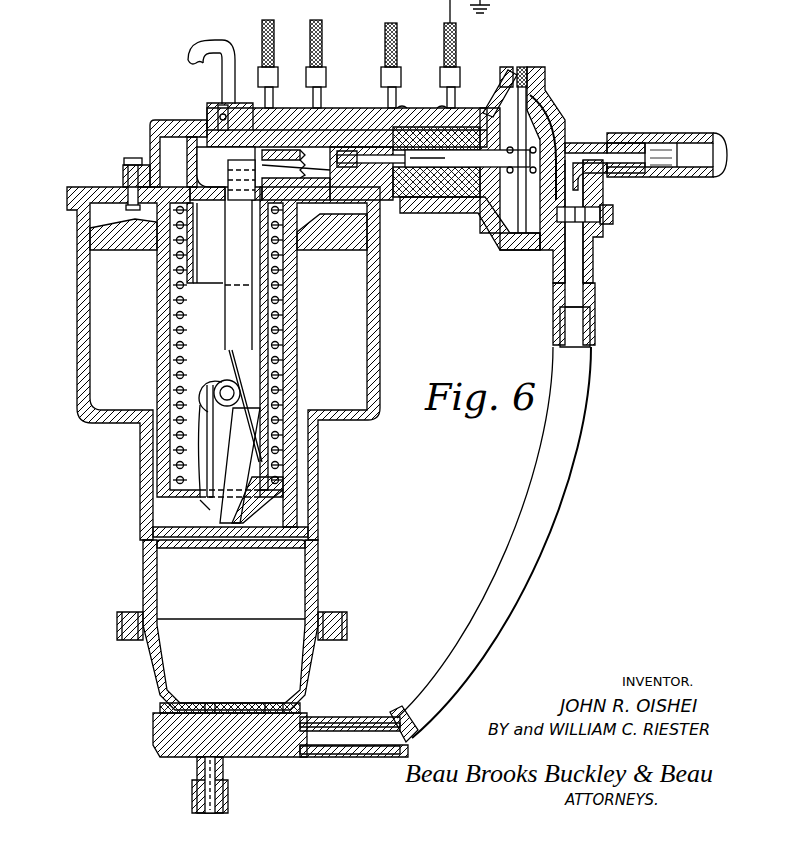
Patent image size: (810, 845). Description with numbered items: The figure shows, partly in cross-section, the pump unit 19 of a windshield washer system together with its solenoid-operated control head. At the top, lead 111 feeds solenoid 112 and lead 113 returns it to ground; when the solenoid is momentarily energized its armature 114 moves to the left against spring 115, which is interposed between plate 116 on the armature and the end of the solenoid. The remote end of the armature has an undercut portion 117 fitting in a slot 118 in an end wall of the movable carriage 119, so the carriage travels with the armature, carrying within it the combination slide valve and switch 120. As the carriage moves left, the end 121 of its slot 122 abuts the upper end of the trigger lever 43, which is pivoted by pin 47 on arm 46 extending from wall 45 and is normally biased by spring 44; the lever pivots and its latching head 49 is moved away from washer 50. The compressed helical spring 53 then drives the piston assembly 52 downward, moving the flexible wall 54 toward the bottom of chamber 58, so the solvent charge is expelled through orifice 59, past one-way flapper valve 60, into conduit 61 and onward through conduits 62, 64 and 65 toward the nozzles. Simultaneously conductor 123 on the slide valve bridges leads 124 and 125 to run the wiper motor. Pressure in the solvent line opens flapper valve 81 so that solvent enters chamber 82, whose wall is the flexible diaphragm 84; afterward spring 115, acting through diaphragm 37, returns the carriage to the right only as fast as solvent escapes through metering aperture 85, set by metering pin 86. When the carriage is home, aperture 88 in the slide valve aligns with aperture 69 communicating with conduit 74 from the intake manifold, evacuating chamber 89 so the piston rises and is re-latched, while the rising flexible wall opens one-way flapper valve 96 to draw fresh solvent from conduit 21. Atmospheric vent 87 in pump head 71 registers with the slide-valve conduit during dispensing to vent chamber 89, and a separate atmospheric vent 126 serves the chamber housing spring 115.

The pump unit 19 is at (78, 396).
The conduit 21 is at (228, 795).
The diaphragm 37 is at (527, 215).
The trigger lever 43 is at (246, 260).
The spring 44 is at (201, 441).
The wall 45 is at (255, 478).
The arm 46 is at (252, 375).
The pin 47 is at (222, 382).
The latching head 49 is at (207, 510).
The washer 50 is at (200, 490).
The piston assembly 52 is at (300, 324).
The helical spring 53 is at (280, 308).
The flexible wall 54 is at (245, 550).
The chamber 58 is at (223, 606).
The orifice 59 is at (270, 705).
The one-way flapper valve 60 is at (283, 705).
The conduit 61 is at (445, 672).
The conduit 62 is at (582, 258).
The conduit 64 is at (595, 143).
The conduit 65 is at (688, 133).
The aperture 69 is at (212, 107).
The pump head 71 is at (150, 142).
The conduit 74 is at (213, 40).
The flapper valve 81 is at (560, 125).
The chamber 82 is at (552, 112).
The flexible diaphragm 84 is at (538, 100).
The metering aperture 85 is at (540, 252).
The metering pin 86 is at (615, 214).
The atmospheric vent 87 is at (200, 112).
The aperture 88 is at (224, 148).
The chamber 89 is at (310, 226).
The one-way flapper valve 96 is at (210, 703).
The lead 111 is at (386, 50).
The solenoid 112 is at (410, 200).
The lead 113 is at (458, 48).
The armature 114 is at (467, 160).
The spring 115 is at (493, 150).
The plate 116 is at (525, 185).
The undercut portion 117 is at (345, 159).
The slot 118 is at (353, 110).
The carriage 119 is at (290, 178).
The combination slide valve and switch 120 is at (250, 105).
The end 121 is at (257, 166).
The slot 122 is at (205, 200).
The conductor 123 is at (326, 112).
The lead 124 is at (275, 42).
The lead 125 is at (325, 45).
The atmospheric vent 126 is at (496, 100).